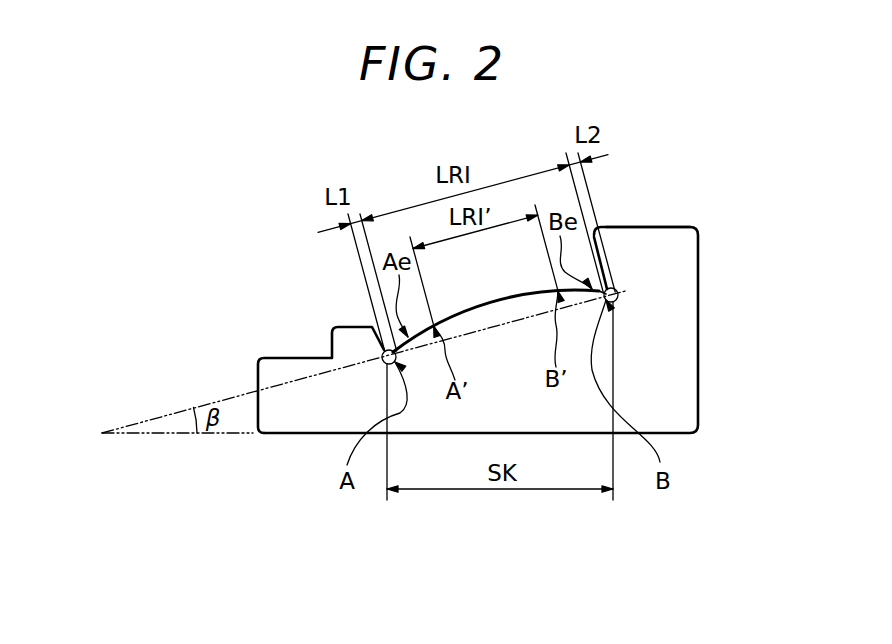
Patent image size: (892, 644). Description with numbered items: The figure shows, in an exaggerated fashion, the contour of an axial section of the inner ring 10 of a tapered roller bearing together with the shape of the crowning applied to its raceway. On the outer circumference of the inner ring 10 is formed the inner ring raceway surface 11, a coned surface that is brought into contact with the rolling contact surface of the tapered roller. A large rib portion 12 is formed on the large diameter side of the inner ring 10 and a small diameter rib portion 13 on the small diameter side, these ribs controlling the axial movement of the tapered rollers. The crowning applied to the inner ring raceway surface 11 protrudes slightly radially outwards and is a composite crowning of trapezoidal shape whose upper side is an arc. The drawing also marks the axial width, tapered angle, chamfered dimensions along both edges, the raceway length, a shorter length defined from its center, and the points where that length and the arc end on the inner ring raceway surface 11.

The inner ring 10 is at (683, 351).
The inner ring raceway surface 11 is at (488, 301).
The large rib portion 12 is at (655, 227).
The small diameter rib portion 13 is at (348, 327).